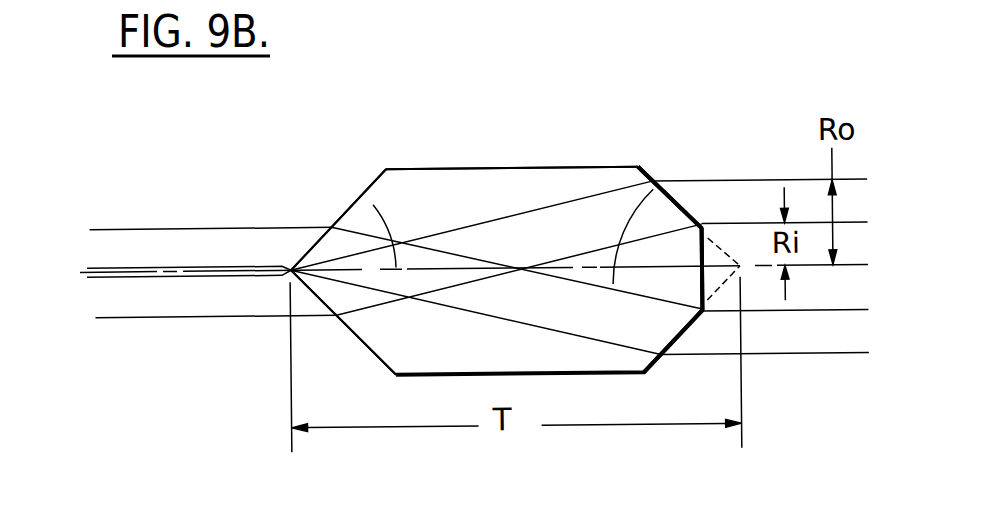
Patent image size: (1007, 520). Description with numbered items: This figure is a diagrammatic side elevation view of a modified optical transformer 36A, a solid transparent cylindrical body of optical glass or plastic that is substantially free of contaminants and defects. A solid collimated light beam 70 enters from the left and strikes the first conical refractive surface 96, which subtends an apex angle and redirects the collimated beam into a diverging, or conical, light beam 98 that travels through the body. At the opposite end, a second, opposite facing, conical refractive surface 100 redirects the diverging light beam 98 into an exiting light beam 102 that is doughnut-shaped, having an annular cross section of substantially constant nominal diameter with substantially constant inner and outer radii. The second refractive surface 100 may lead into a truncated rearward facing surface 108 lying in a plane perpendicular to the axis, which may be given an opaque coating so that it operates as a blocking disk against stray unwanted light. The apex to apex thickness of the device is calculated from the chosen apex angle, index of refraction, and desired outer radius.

The solid collimated light beam 70 is at (162, 250).
The optical transformer 36A is at (490, 153).
The first conical refractive surface 96 is at (366, 186).
The diverging light beam 98 is at (538, 232).
The second conical refractive surface 100 is at (646, 174).
The exiting light beam 102 is at (740, 197).
The truncated rearward facing surface 108 is at (706, 283).